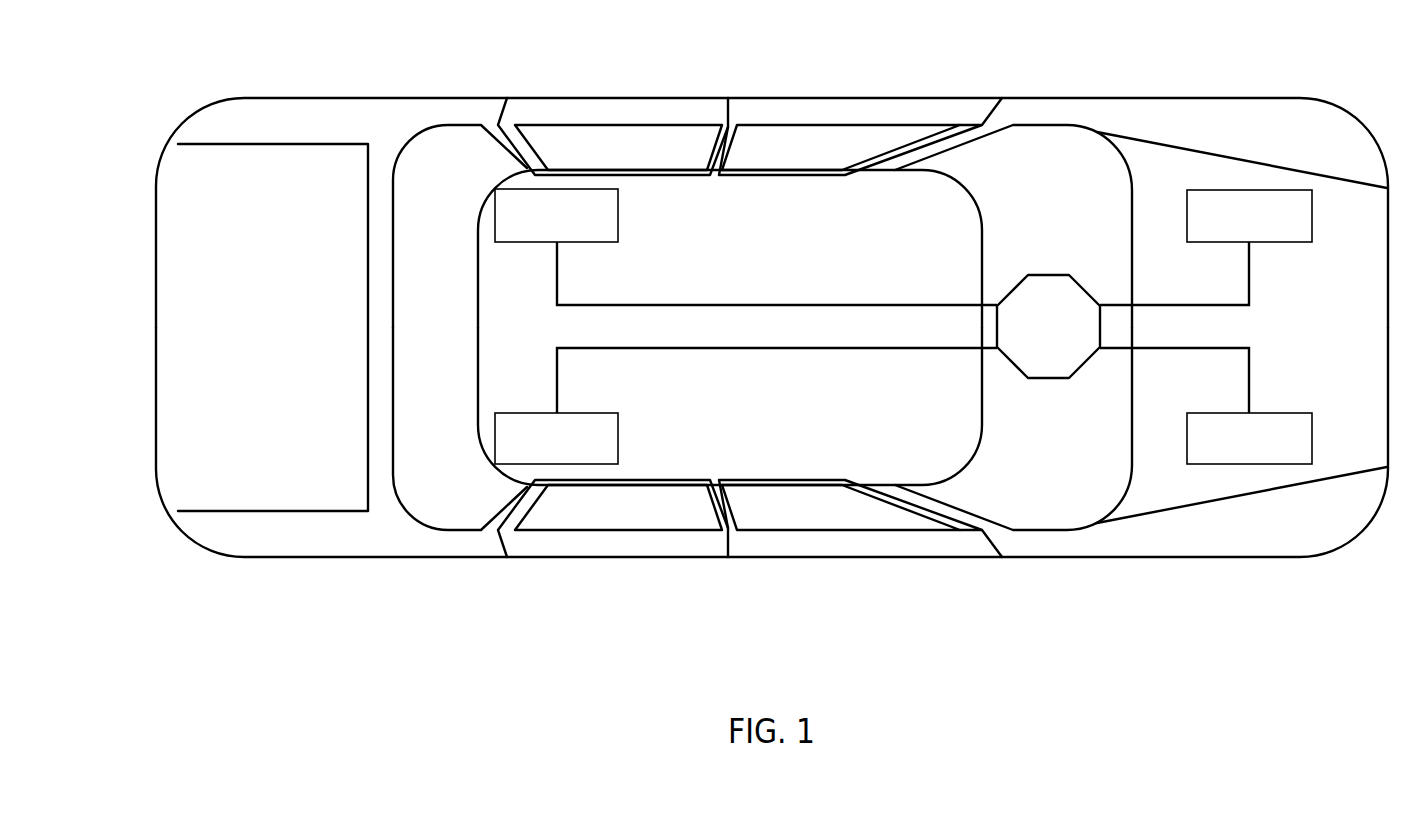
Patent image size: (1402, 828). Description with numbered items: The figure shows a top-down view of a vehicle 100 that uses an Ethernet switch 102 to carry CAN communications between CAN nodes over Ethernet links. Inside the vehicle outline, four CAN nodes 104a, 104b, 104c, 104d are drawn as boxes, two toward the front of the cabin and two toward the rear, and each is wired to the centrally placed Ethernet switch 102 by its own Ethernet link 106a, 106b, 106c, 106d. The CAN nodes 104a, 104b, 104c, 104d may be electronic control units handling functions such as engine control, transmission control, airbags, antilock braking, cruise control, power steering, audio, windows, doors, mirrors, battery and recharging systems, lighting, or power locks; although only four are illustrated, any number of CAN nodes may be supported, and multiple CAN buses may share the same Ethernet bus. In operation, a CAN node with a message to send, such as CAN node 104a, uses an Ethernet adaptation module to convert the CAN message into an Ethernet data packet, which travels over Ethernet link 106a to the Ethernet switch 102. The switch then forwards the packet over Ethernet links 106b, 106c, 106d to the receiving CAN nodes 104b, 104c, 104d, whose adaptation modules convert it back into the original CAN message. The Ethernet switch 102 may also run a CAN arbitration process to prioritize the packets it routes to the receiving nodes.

The vehicle 100 is at (1243, 97).
The Ethernet switch 102 is at (1048, 326).
The CAN node 104a is at (556, 215).
The CAN node 104b is at (1249, 215).
The CAN node 104c is at (556, 438).
The CAN node 104d is at (1249, 438).
The Ethernet link 106a is at (656, 304).
The Ethernet link 106b is at (1250, 277).
The Ethernet link 106c is at (727, 350).
The Ethernet link 106d is at (1252, 377).